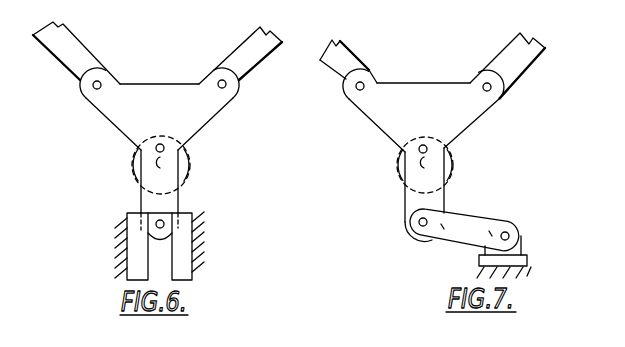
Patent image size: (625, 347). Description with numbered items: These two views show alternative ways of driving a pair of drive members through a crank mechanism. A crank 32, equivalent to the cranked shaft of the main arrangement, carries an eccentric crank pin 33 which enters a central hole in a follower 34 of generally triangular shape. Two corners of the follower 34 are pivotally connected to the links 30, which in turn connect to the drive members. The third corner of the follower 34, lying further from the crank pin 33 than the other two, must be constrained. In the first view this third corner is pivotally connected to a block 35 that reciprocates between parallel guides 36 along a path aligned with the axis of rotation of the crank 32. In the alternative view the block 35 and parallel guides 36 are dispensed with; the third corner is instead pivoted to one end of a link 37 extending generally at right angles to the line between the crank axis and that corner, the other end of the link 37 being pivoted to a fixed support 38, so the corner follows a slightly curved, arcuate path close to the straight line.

In FIG. 6, the links 30 is at (67, 46).
In FIG. 7, the links 30 is at (347, 58).
In FIG. 6, the crank 32 is at (186, 173).
In FIG. 7, the crank 32 is at (451, 171).
In FIG. 6, the eccentric crank pin 33 is at (165, 148).
In FIG. 7, the eccentric crank pin 33 is at (428, 149).
In FIG. 6, the follower 34 is at (160, 99).
In FIG. 7, the follower 34 is at (427, 103).
In FIG. 6, the block 35 is at (173, 210).
In FIG. 6, the parallel guides 36 is at (130, 246).
In FIG. 7, the link 37 is at (477, 224).
In FIG. 7, the fixed support 38 is at (513, 222).